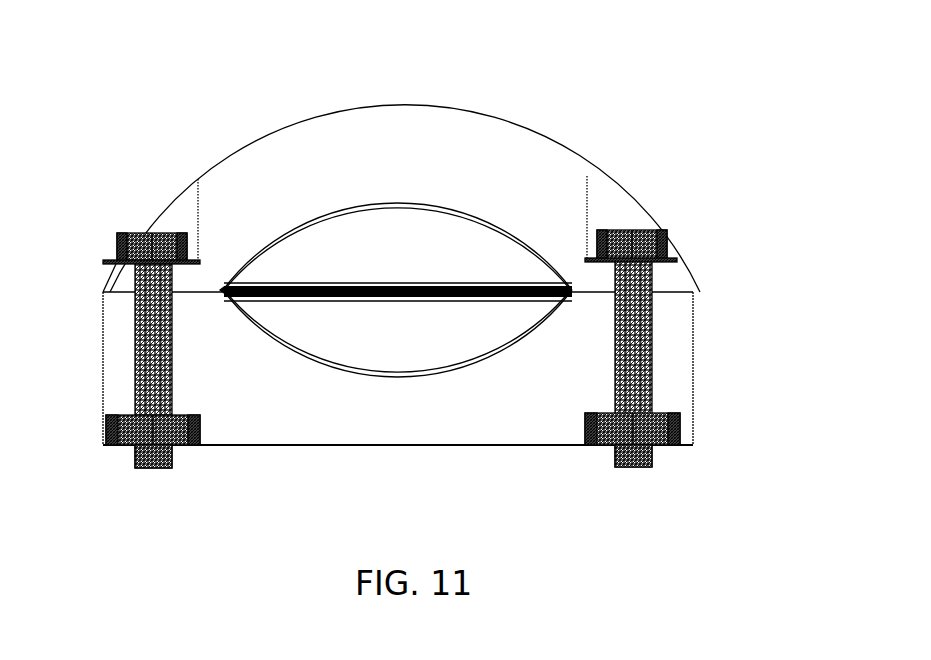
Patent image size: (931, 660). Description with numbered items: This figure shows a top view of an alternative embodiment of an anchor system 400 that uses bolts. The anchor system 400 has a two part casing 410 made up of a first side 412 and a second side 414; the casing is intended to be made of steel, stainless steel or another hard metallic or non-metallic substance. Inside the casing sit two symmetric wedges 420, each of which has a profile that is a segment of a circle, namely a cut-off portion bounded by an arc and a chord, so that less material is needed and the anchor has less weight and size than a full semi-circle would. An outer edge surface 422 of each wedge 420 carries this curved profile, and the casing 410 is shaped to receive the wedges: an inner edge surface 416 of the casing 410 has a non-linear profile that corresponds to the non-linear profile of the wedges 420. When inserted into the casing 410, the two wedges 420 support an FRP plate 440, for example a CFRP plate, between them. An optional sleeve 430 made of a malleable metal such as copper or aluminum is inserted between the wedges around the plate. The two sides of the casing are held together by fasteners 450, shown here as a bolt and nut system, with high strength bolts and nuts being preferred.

The anchor system 400 is at (563, 97).
The two part casing 410 is at (718, 328).
The first side 412 is at (382, 137).
The second side 414 is at (400, 417).
The inner edge surface 416 is at (293, 357).
The symmetric wedge 420 is at (463, 222).
The outer edge surface 422 is at (292, 222).
The sleeve 430 is at (222, 290).
The FRP plate 440 is at (338, 295).
The fastener 450 is at (113, 232).